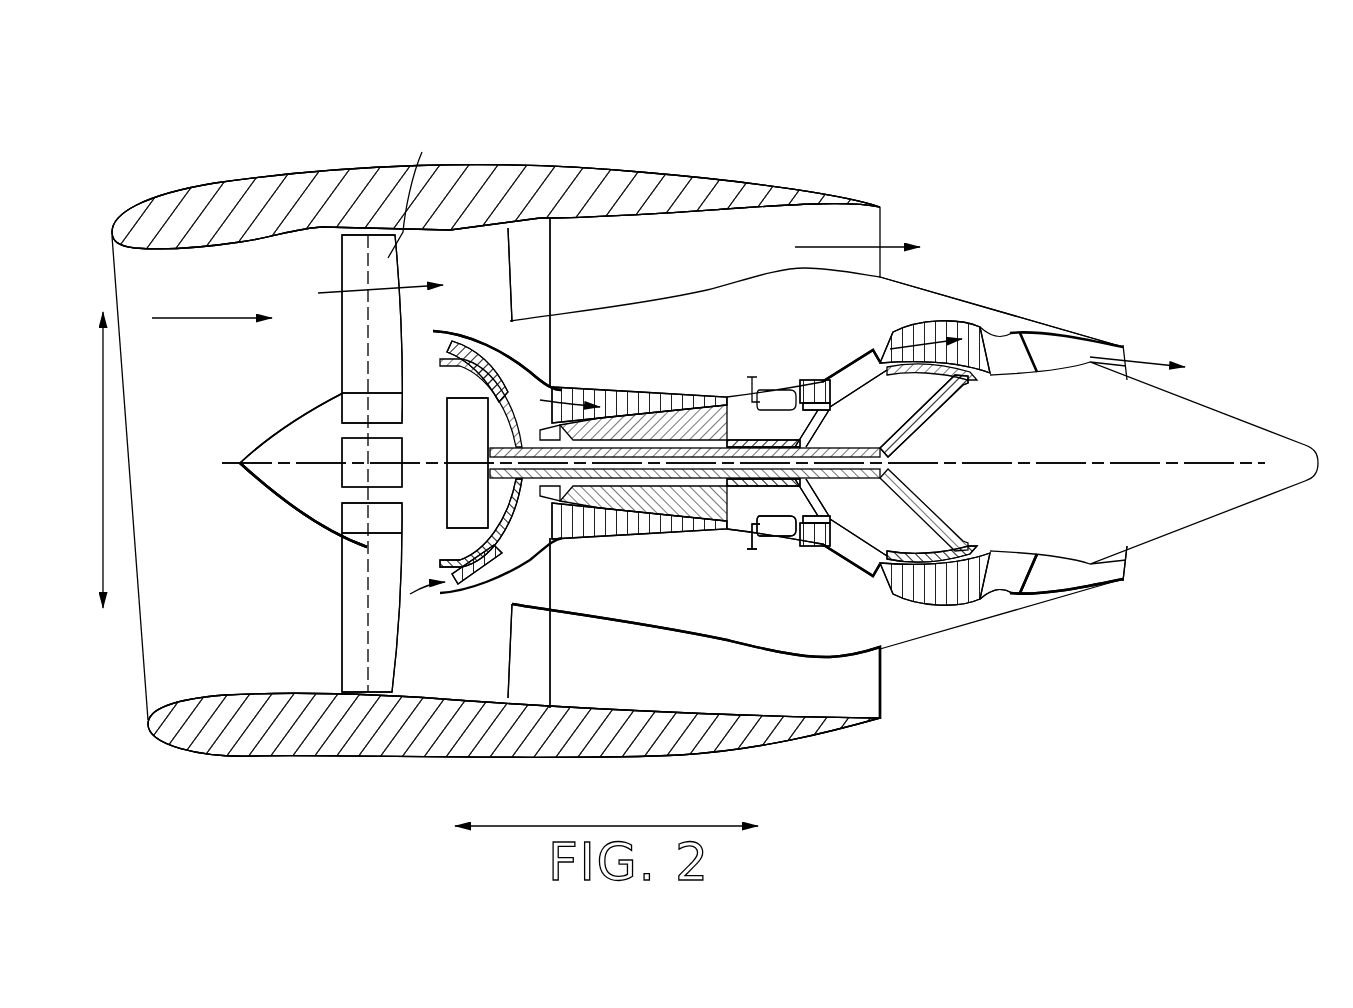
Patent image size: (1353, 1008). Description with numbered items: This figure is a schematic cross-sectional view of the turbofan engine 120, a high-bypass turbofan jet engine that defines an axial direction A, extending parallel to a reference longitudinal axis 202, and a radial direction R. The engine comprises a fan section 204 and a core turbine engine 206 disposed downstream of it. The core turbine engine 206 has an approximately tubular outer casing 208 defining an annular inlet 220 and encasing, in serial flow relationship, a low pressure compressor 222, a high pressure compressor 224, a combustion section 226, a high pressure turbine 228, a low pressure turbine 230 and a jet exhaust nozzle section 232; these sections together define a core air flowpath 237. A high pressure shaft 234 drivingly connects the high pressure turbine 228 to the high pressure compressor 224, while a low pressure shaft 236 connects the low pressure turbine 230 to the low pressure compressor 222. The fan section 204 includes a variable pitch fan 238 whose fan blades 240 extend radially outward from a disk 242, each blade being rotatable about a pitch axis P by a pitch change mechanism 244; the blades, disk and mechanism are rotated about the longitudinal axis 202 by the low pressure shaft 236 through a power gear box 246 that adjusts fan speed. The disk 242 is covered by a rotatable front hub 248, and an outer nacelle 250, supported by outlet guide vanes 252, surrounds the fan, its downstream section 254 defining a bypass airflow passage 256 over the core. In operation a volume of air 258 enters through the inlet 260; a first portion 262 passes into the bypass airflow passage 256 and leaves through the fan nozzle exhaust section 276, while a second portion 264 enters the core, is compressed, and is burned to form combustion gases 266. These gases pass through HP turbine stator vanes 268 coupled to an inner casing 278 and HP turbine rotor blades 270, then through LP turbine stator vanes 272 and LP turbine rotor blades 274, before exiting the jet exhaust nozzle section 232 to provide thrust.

The turbofan engine 120 is at (1036, 198).
The longitudinal axis 202 is at (1066, 462).
The fan section 204 is at (250, 271).
The core turbine engine 206 is at (676, 355).
The outer casing 208 is at (727, 644).
The annular inlet 220 is at (412, 600).
The low pressure compressor 222 is at (484, 590).
The high pressure compressor 224 is at (584, 532).
The combustion section 226 is at (770, 548).
The high pressure turbine 228 is at (840, 539).
The low pressure turbine 230 is at (974, 605).
The jet exhaust nozzle section 232 is at (1040, 585).
The high pressure shaft 234 is at (803, 437).
The low pressure shaft 236 is at (882, 442).
The core air flowpath 237 is at (528, 553).
The variable pitch fan 238 is at (297, 515).
The fan blades 240 is at (341, 628).
The disk 242 is at (352, 406).
The pitch change mechanism 244 is at (341, 450).
The power gear box 246 is at (527, 390).
The rotatable front hub 248 is at (258, 481).
The outer nacelle 250 is at (387, 762).
The outlet guide vanes 252 is at (552, 263).
The downstream section of nacelle 254 is at (773, 185).
The bypass airflow passage 256 is at (713, 258).
The volume of air 258 is at (207, 312).
The inlet 260 is at (137, 707).
The first portion of air 262 is at (845, 247).
The second portion of air 264 is at (435, 345).
The combustion gases 266 is at (927, 338).
The HP turbine stator vanes 268 is at (800, 545).
The HP turbine rotor blades 270 is at (805, 500).
The LP turbine stator vanes 272 is at (890, 597).
The LP turbine rotor blades 274 is at (898, 600).
The fan nozzle exhaust section 276 is at (865, 226).
The inner casing 278 is at (868, 352).
The pitch axis P is at (422, 152).
The radial direction R is at (103, 464).
The axial direction A is at (612, 825).